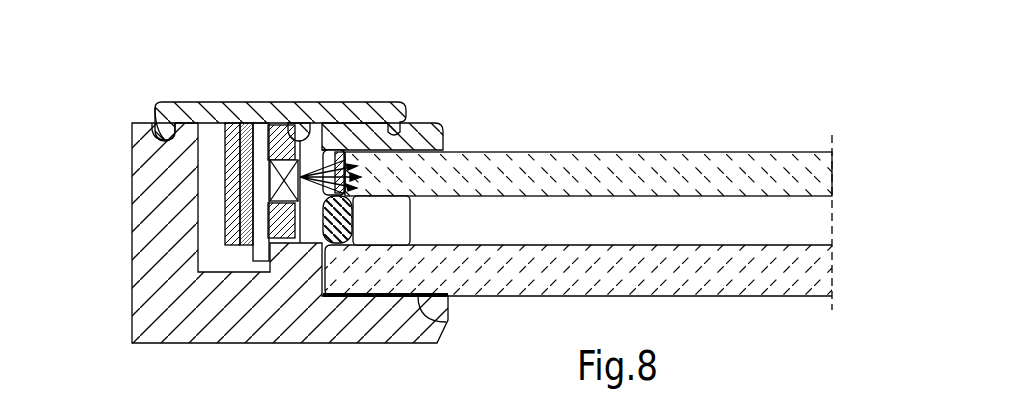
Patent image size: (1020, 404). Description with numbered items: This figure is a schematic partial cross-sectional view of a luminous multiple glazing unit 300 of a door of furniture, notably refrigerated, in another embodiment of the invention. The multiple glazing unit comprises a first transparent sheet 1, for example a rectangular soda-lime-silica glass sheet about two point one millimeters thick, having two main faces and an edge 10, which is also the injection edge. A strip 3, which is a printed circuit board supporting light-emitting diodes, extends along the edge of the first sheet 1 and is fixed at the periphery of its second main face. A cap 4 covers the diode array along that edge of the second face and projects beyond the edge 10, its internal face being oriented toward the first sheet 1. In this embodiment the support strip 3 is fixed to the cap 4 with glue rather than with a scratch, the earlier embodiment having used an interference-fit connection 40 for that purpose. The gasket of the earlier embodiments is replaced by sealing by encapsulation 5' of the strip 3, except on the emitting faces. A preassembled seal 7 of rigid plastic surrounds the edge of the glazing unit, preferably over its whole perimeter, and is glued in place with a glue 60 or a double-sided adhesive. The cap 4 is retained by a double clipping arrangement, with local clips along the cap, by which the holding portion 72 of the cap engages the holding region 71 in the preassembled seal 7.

The luminous multiple glazing unit 300 is at (174, 46).
The first transparent sheet 1 is at (614, 174).
The strip supporting light-emitting diodes 3 is at (263, 125).
The cap 4 is at (178, 112).
The interference-fit connection 40 is at (234, 125).
The sealing by encapsulation 5' is at (293, 143).
The preassembled seal 7 is at (147, 226).
The edge 10 is at (326, 150).
The glue 60 is at (446, 320).
The holding in the preassembled seal 71 is at (157, 143).
The holding of the cap 72 is at (153, 104).